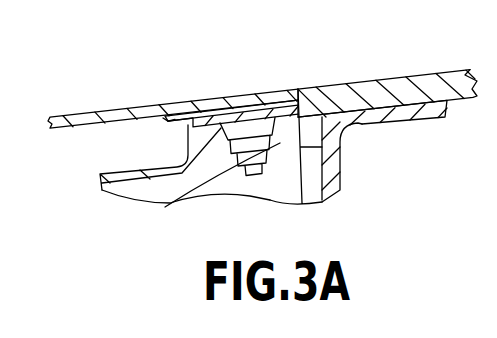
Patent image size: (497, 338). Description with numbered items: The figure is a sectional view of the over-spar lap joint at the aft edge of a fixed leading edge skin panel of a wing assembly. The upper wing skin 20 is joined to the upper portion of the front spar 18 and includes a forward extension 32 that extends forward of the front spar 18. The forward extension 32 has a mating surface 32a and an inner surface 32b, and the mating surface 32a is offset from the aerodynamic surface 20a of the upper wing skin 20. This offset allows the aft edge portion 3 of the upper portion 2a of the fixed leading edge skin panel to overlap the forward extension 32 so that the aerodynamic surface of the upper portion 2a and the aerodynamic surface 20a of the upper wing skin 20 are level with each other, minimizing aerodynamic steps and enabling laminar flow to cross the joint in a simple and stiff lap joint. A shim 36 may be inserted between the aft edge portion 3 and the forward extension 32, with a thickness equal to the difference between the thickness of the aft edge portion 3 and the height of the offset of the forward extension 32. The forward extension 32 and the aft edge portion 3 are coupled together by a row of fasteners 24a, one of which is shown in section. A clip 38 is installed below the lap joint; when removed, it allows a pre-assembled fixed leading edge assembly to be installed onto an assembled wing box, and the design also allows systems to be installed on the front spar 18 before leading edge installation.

The upper portion of fixed leading edge skin panel 2a is at (67, 117).
The aft edge portion 3 is at (170, 101).
The shim 36 is at (173, 124).
The mating surface 32a is at (210, 107).
The forward extension 32 is at (257, 110).
The upper wing skin 20 is at (403, 87).
The aerodynamic surface 20a is at (327, 88).
The inner surface 32b is at (294, 126).
The front spar 18 is at (342, 183).
The fasteners 24a is at (227, 127).
The clip 38 is at (277, 178).